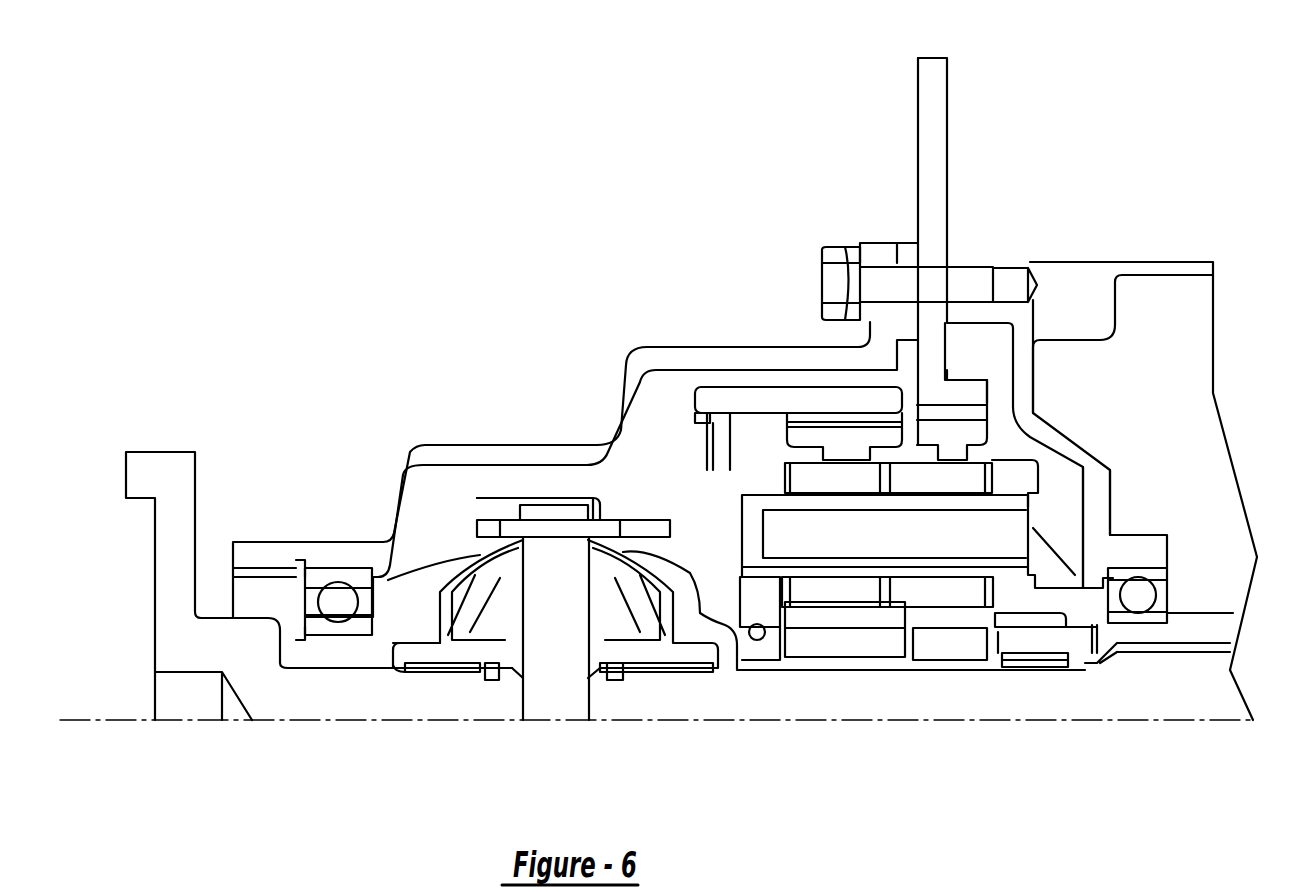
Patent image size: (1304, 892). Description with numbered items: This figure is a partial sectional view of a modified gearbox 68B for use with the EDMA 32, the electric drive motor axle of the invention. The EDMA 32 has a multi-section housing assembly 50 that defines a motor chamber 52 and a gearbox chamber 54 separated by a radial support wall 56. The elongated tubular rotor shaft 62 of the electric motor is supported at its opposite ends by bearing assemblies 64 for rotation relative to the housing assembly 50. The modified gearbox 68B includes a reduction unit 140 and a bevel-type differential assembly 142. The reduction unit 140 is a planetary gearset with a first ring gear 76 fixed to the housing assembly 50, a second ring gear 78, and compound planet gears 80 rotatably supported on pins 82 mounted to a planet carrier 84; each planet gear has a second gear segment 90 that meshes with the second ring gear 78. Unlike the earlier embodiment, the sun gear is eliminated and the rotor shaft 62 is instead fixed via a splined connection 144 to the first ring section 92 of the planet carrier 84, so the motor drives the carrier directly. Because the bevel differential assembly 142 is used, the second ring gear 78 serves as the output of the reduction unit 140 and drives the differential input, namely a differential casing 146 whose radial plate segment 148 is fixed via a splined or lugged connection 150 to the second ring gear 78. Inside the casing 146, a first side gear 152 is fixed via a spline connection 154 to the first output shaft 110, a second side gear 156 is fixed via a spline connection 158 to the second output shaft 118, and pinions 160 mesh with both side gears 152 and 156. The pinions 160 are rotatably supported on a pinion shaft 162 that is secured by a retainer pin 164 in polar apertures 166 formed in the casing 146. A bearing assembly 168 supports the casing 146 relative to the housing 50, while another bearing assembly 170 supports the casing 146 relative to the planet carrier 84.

The EDMA 32 is at (1043, 235).
The multi-section housing assembly 50 is at (1170, 262).
The motor chamber 52 is at (1135, 308).
The gearbox chamber 54 is at (415, 500).
The radial support wall 56 is at (1095, 500).
The rotor shaft 62 is at (1195, 628).
The bearing assemblies 64 is at (1140, 590).
The modified gearbox 68B is at (670, 410).
The first ring gear 76 is at (935, 357).
The second ring gear 78 is at (840, 400).
The compound planet gears 80 is at (858, 660).
The pins 82 is at (900, 545).
The planet carrier 84 is at (745, 608).
The second gear segment 90 is at (805, 650).
The first ring section 92 is at (1018, 607).
The first output shaft 110 is at (300, 688).
The second output shaft 118 is at (895, 692).
The reduction unit 140 is at (1003, 440).
The bevel-type differential assembly 142 is at (418, 503).
The splined connection 144 is at (1037, 668).
The differential casing 146 is at (600, 497).
The radial plate segment 148 is at (710, 445).
The splined or lugged connection 150 is at (712, 443).
The first side gear 152 is at (460, 672).
The spline connection 154 is at (410, 672).
The second side gear 156 is at (645, 643).
The spline connection 158 is at (690, 700).
The pinions 160 is at (655, 552).
The pinion shaft 162 is at (552, 712).
The retainer pin 164 is at (613, 503).
The polar apertures 166 is at (533, 497).
The bearing assembly 168 is at (337, 600).
The bearing assembly 170 is at (755, 640).